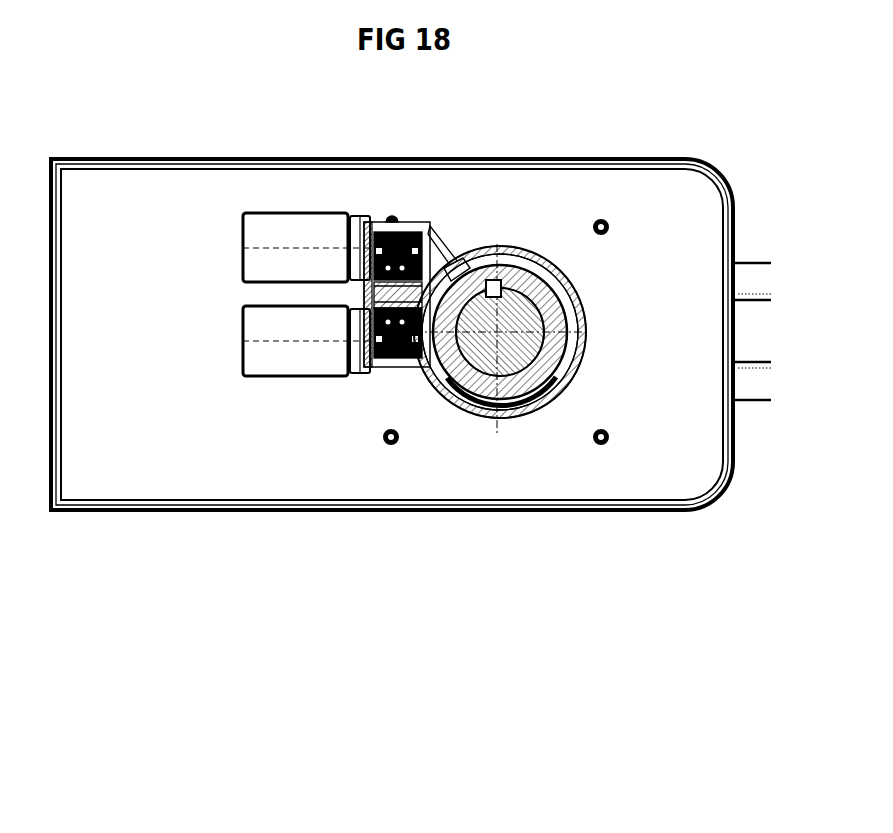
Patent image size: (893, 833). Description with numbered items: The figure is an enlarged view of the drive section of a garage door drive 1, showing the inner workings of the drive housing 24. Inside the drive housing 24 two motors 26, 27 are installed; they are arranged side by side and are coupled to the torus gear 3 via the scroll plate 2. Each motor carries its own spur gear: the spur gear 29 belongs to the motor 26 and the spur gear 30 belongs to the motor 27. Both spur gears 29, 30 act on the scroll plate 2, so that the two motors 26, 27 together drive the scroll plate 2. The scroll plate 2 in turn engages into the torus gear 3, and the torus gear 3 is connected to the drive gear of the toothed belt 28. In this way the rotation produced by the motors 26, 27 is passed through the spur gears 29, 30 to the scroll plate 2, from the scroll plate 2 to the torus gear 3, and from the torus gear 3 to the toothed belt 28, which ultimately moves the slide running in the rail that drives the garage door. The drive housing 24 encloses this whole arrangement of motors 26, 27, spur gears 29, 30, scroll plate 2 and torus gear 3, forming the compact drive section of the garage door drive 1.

The capacitor terminal cap 1 is at (332, 307).
The scroll plate 2 is at (422, 395).
The torus gear 3 is at (473, 420).
The drive housing 24 is at (64, 510).
The motor 26 is at (253, 247).
The motor 27 is at (322, 352).
The toothed belt 28 is at (523, 423).
The spur gear 29 is at (347, 263).
The spur gear 30 is at (385, 367).